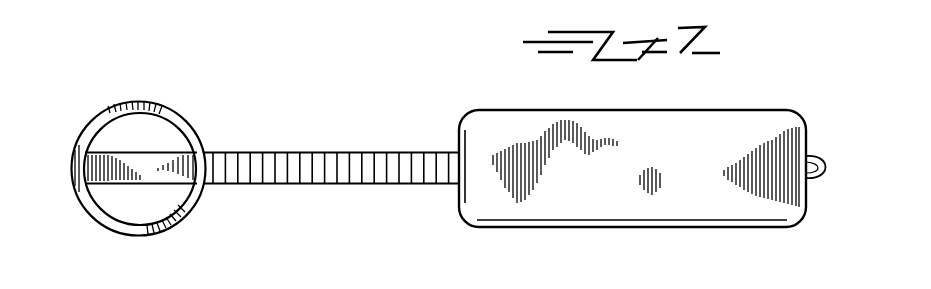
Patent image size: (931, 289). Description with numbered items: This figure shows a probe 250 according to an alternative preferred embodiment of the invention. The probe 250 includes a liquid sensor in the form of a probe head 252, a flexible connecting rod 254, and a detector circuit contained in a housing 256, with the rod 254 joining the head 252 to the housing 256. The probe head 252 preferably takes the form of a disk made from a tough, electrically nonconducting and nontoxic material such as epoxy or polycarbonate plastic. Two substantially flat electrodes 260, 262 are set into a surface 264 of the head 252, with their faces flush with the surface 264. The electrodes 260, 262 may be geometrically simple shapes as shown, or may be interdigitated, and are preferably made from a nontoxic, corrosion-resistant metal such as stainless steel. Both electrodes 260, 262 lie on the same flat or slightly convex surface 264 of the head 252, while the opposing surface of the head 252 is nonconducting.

The probe 250 is at (400, 124).
The probe head 252 is at (103, 110).
The flexible connecting rod 254 is at (265, 185).
The housing 256 is at (523, 117).
The electrode 260 is at (103, 140).
The electrode 262 is at (112, 205).
The surface 264 is at (183, 118).